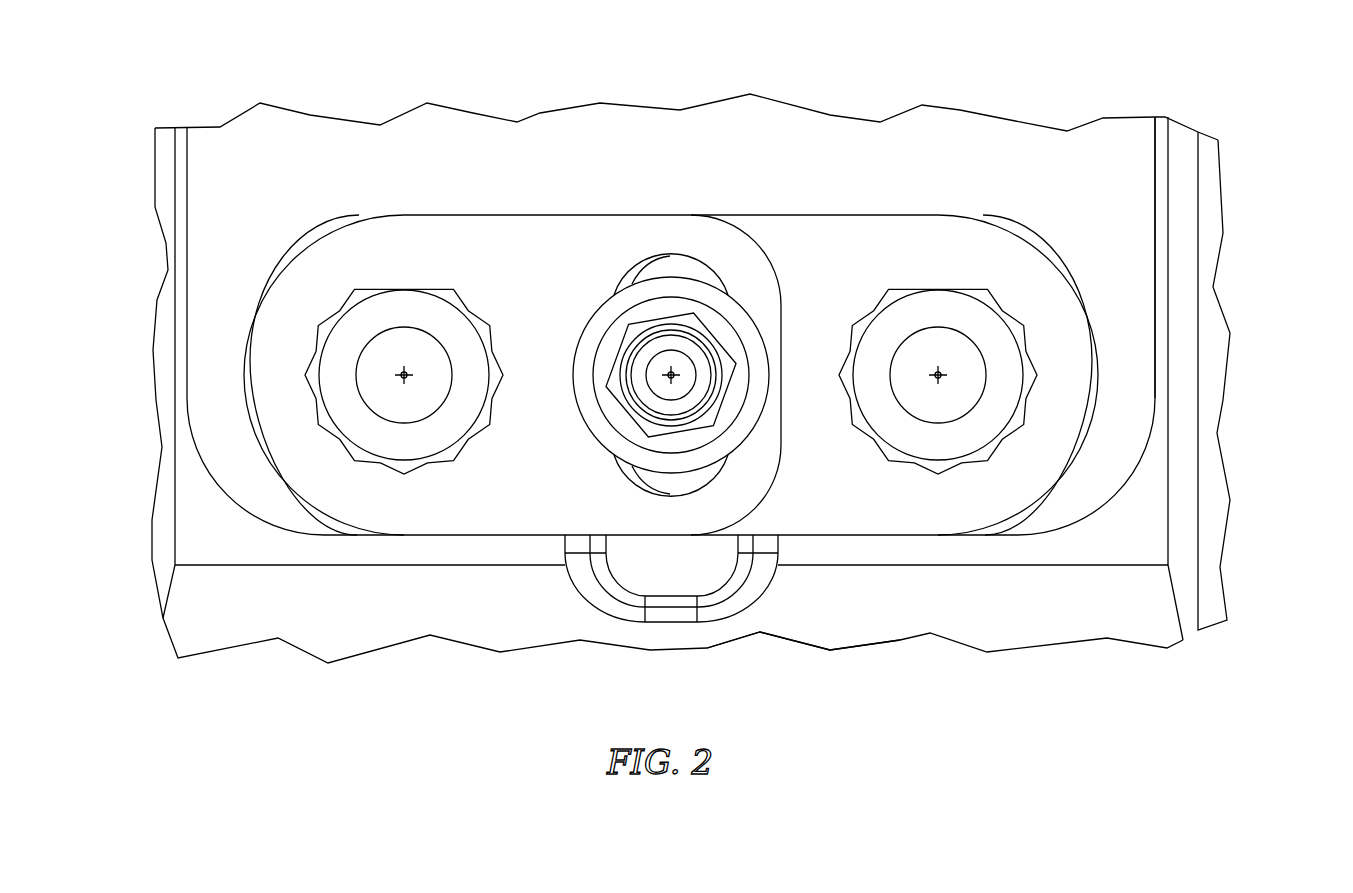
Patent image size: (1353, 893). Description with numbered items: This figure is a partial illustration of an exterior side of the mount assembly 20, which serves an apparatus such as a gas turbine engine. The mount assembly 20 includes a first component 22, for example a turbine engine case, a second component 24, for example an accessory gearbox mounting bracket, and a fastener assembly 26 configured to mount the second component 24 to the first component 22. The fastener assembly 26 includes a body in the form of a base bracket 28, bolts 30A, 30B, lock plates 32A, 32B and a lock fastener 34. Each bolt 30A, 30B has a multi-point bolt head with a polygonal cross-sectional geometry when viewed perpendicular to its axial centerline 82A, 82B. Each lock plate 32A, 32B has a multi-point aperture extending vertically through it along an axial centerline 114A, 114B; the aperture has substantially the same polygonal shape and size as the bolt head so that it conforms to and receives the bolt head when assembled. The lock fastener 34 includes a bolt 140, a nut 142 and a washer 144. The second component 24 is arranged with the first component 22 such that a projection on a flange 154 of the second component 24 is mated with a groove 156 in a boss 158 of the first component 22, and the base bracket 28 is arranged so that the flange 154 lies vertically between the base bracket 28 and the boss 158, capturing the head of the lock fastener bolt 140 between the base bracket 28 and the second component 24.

The mount assembly 20 is at (736, 342).
The first component 22 is at (736, 342).
The second component 24 is at (998, 110).
The fastener assembly 26 is at (689, 332).
The base bracket 28 is at (1048, 515).
The bolt 30A is at (971, 321).
The bolt 30B is at (404, 344).
The lock plate 32A is at (1107, 360).
The lock plate 32B is at (238, 390).
The lock fastener 34 is at (724, 272).
The axial centerline 82A is at (928, 296).
The axial centerline 82B is at (399, 293).
The axial centerline 114A is at (938, 373).
The axial centerline 114B is at (404, 373).
The bolt 140 is at (708, 347).
The nut 142 is at (672, 296).
The washer 144 is at (611, 298).
The flange 154 is at (1160, 261).
The groove 156 is at (653, 572).
The boss 158 is at (806, 630).